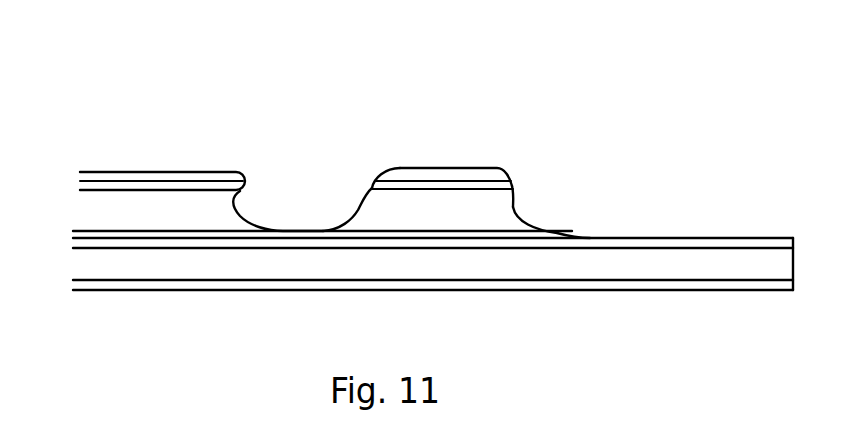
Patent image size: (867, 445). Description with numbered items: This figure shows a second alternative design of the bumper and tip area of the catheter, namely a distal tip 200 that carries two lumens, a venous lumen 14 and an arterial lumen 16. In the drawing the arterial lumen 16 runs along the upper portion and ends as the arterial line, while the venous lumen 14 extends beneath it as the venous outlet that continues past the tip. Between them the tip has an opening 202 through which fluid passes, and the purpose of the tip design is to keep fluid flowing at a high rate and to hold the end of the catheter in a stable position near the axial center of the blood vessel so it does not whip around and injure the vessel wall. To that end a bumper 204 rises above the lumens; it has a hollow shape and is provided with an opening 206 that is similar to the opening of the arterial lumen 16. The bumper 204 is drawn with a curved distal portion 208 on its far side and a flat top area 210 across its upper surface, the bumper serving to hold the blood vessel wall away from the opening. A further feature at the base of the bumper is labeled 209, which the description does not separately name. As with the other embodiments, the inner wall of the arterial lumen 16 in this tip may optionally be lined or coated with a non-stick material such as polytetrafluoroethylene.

The venous lumen 14 is at (480, 268).
The arterial lumen 16 is at (157, 203).
The distal tip 200 is at (432, 141).
The opening 202 is at (261, 198).
The bumper 204 is at (370, 197).
The opening 206 is at (355, 206).
The curved distal portion 208 is at (517, 182).
The connector flared base 209 is at (515, 209).
The flat top area 210 is at (430, 168).